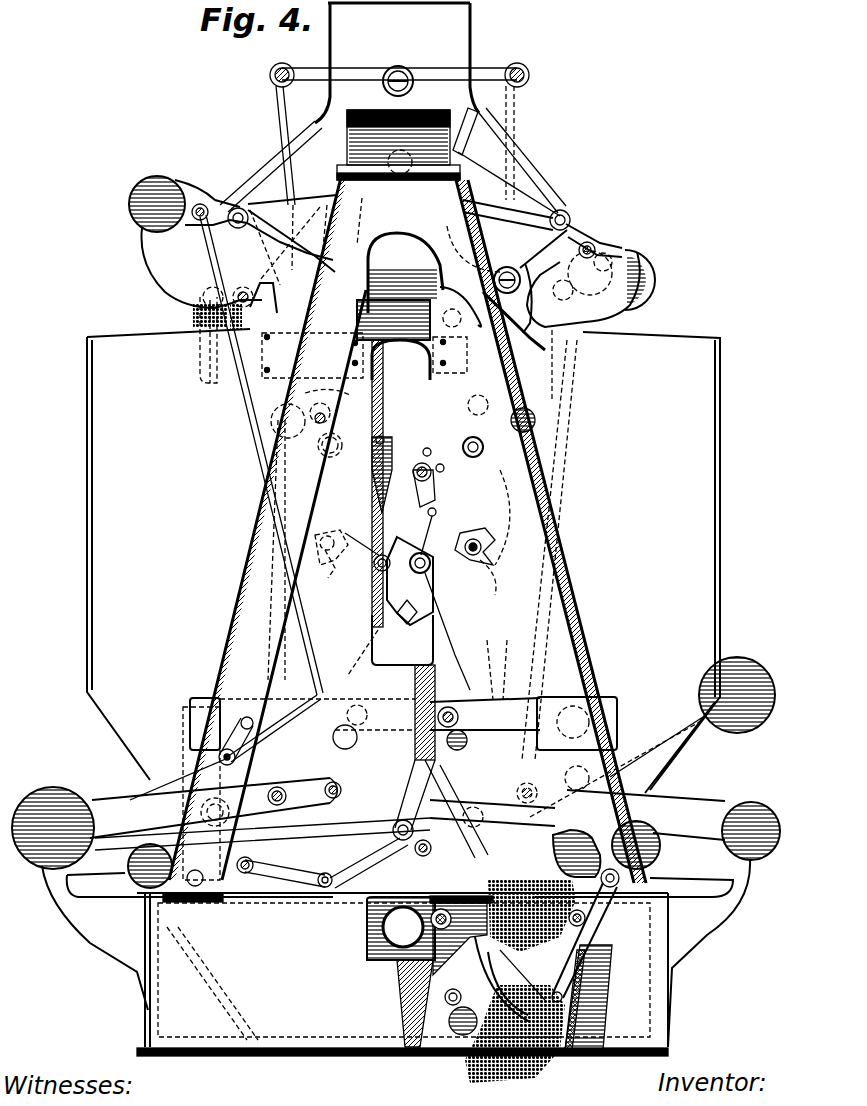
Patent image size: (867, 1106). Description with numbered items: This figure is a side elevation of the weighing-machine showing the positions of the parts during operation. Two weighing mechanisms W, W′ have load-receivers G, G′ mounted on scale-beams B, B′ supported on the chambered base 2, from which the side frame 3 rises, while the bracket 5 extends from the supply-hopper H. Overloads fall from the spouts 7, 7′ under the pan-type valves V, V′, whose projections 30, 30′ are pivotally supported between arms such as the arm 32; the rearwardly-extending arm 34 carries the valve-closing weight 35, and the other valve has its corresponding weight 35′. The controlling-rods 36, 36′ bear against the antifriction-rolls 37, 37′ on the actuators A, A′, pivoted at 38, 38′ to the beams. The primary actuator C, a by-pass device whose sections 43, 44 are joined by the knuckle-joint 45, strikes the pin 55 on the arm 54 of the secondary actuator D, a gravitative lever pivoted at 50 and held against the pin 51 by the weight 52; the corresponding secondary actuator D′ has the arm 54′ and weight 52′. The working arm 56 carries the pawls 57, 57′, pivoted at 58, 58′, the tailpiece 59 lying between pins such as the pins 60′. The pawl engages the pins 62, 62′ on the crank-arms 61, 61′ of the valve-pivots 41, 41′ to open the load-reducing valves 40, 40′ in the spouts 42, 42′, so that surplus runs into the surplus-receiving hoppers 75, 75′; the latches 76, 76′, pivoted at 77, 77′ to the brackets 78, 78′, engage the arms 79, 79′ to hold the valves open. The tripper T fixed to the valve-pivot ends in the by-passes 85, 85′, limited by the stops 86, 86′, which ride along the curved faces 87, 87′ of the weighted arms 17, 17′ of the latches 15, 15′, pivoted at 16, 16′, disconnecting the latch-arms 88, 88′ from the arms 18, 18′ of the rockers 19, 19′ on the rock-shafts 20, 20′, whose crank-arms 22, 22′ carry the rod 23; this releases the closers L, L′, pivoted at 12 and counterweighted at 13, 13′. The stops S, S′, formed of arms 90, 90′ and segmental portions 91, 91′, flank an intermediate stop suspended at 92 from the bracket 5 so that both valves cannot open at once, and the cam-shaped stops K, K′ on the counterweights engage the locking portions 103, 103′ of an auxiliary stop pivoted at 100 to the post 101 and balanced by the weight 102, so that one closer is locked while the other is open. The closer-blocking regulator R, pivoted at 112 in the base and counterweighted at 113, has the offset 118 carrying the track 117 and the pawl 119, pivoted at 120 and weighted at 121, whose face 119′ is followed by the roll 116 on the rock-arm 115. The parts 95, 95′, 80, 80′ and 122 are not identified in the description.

The hopper housing H is at (397, 63).
The cylinder 5 is at (362, 112).
The pin 92 is at (413, 128).
The link 91 is at (310, 237).
The link 91′ is at (474, 112).
The rod 7 is at (262, 175).
The rod 7′ is at (556, 182).
The post 32 is at (300, 208).
The pivot pin 34 is at (203, 204).
The pivot 30 is at (240, 208).
The pivot 30′ is at (565, 212).
The weight ball 35 is at (128, 208).
The weight ball 35′ is at (646, 278).
The lever V is at (145, 242).
The lever V′ is at (588, 278).
The pin 43 is at (203, 277).
The hook 45 is at (178, 292).
The lever 90 is at (262, 268).
The lever 90′ is at (472, 170).
The link S is at (292, 233).
The link S′ is at (508, 204).
The link 95 is at (390, 217).
The link 95′ is at (452, 225).
The pin 22 is at (265, 295).
The pin 22′ is at (470, 308).
The arm 20 is at (308, 308).
The cam arm 20′ is at (448, 303).
The rod 36 is at (243, 397).
The rod 36′ is at (573, 383).
The rod 44 is at (204, 366).
The arch 19 is at (405, 267).
The arm 19′ is at (526, 345).
The block 18 is at (375, 363).
The block 18′ is at (393, 320).
The wing W is at (69, 315).
The wing W′ is at (713, 318).
The gate G is at (168, 554).
The gate G′ is at (651, 562).
The rod C is at (200, 347).
The plate 55 is at (330, 349).
The slot 54 is at (330, 379).
The slot 54′ is at (417, 378).
The link 50 is at (306, 393).
The disk 52 is at (270, 419).
The disk 52′ is at (545, 420).
The link 51 is at (268, 433).
The pin 16 is at (318, 440).
The pin 16′ is at (520, 445).
The rod 17 is at (282, 483).
The rod 17′ is at (525, 470).
The pivot 15 is at (332, 457).
The pivot 15′ is at (470, 458).
The plate D is at (349, 402).
The plate D′ is at (450, 389).
The bar 56 is at (378, 424).
The wedge 58 is at (385, 462).
The pivot 58′ is at (413, 473).
The pin 88 is at (382, 436).
The pin 88′ is at (426, 447).
The rod 60′ is at (446, 440).
The pin 59 is at (442, 474).
The plate 57 is at (378, 487).
The plate 57′ is at (413, 486).
The pin 62 is at (372, 500).
The pin 62′ is at (438, 511).
The lever 61 is at (361, 536).
The lever 61′ is at (436, 528).
The plate 40 is at (400, 542).
The plate 40′ is at (384, 578).
The trip T is at (345, 535).
The rod 85 is at (300, 528).
The pivot 85′ is at (476, 542).
The frame 3 is at (547, 540).
The lever 86 is at (330, 560).
The lever 86′ is at (469, 578).
The pivot 41 is at (376, 566).
The pivot 41′ is at (441, 578).
The rod 87 is at (292, 583).
The rod 87′ is at (494, 580).
The rod 79 is at (385, 626).
The rod 79′ is at (443, 626).
The arm 42 is at (378, 606).
The arm 42′ is at (413, 617).
The bracket 75 is at (408, 648).
The stem 75′ is at (398, 786).
The weight A is at (107, 800).
The weight A′ is at (738, 668).
The rod 77 is at (350, 691).
The bar 77′ is at (450, 707).
The pivot 78 is at (258, 734).
The rod 78′ is at (507, 705).
The pin 80 is at (363, 707).
The pin 80′ is at (425, 716).
The roller 76 is at (357, 745).
The roller 76′ is at (462, 728).
The pivot 38 is at (290, 779).
The pivot 38′ is at (525, 784).
The pivot 37 is at (340, 789).
The pivot 37′ is at (477, 828).
The rod 103 is at (200, 778).
The rod 103′ is at (640, 770).
The lever K is at (214, 808).
The lever K′ is at (515, 838).
The lever B is at (260, 842).
The lever B′ is at (673, 825).
The rod 23 is at (262, 856).
The lever L is at (281, 871).
The lever L′ is at (584, 942).
The pivot 100 is at (405, 817).
The link 101 is at (382, 862).
The pivot 112 is at (333, 881).
The pivot 102 is at (451, 810).
The bracket 13 is at (135, 881).
The bracket 13′ is at (648, 853).
The pivot 12 is at (195, 888).
The pin 119 is at (440, 990).
The plate 119′ is at (432, 897).
The block 113 is at (390, 926).
The base 2 is at (396, 881).
The hopper 117 is at (520, 981).
The gate plate 118 is at (508, 972).
The roller 120 is at (448, 1022).
The arm 121 is at (452, 1036).
The roller R is at (493, 1025).
The spout 122 is at (462, 1050).
The spout 116 is at (557, 1052).
The block 115 is at (610, 980).